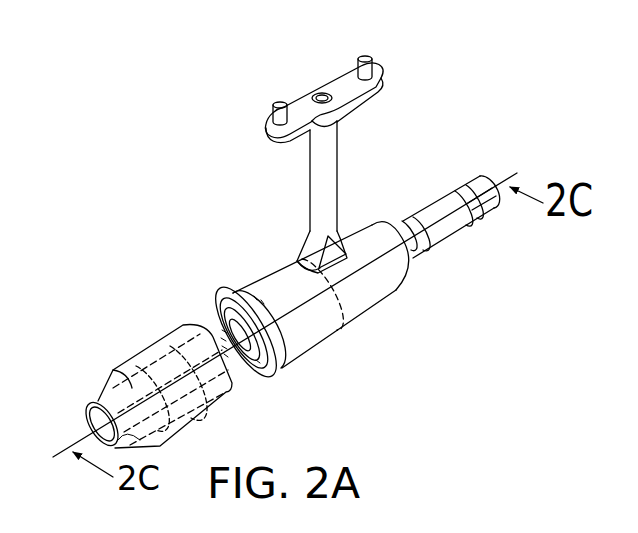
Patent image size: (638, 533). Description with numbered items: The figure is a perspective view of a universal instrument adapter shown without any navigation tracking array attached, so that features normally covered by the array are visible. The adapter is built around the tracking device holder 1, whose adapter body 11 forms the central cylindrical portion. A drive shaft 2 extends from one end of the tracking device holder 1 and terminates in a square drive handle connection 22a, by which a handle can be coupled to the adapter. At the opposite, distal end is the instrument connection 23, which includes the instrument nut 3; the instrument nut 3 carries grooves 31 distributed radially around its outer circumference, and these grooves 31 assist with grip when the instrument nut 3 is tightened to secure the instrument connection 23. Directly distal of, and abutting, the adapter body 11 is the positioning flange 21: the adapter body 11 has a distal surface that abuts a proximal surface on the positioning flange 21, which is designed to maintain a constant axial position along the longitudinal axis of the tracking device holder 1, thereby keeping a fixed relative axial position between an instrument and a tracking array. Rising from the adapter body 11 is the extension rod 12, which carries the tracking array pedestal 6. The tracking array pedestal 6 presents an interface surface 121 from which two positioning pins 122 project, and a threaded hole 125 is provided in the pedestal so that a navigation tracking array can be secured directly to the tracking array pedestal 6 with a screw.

The tracking device holder 1 is at (341, 311).
The adapter body 11 is at (308, 318).
The drive shaft 2 is at (507, 240).
The positioning flange 21 is at (230, 307).
The square drive handle connection 22a is at (480, 203).
The instrument nut 3 is at (158, 357).
The grooves 31 is at (217, 395).
The instrument connection 23 is at (100, 413).
The tracking array pedestal 6 is at (323, 136).
The extension rod 12 is at (323, 162).
The interface surface 121 is at (305, 110).
The positioning pins 122 is at (370, 63).
The threaded hole 125 is at (327, 90).